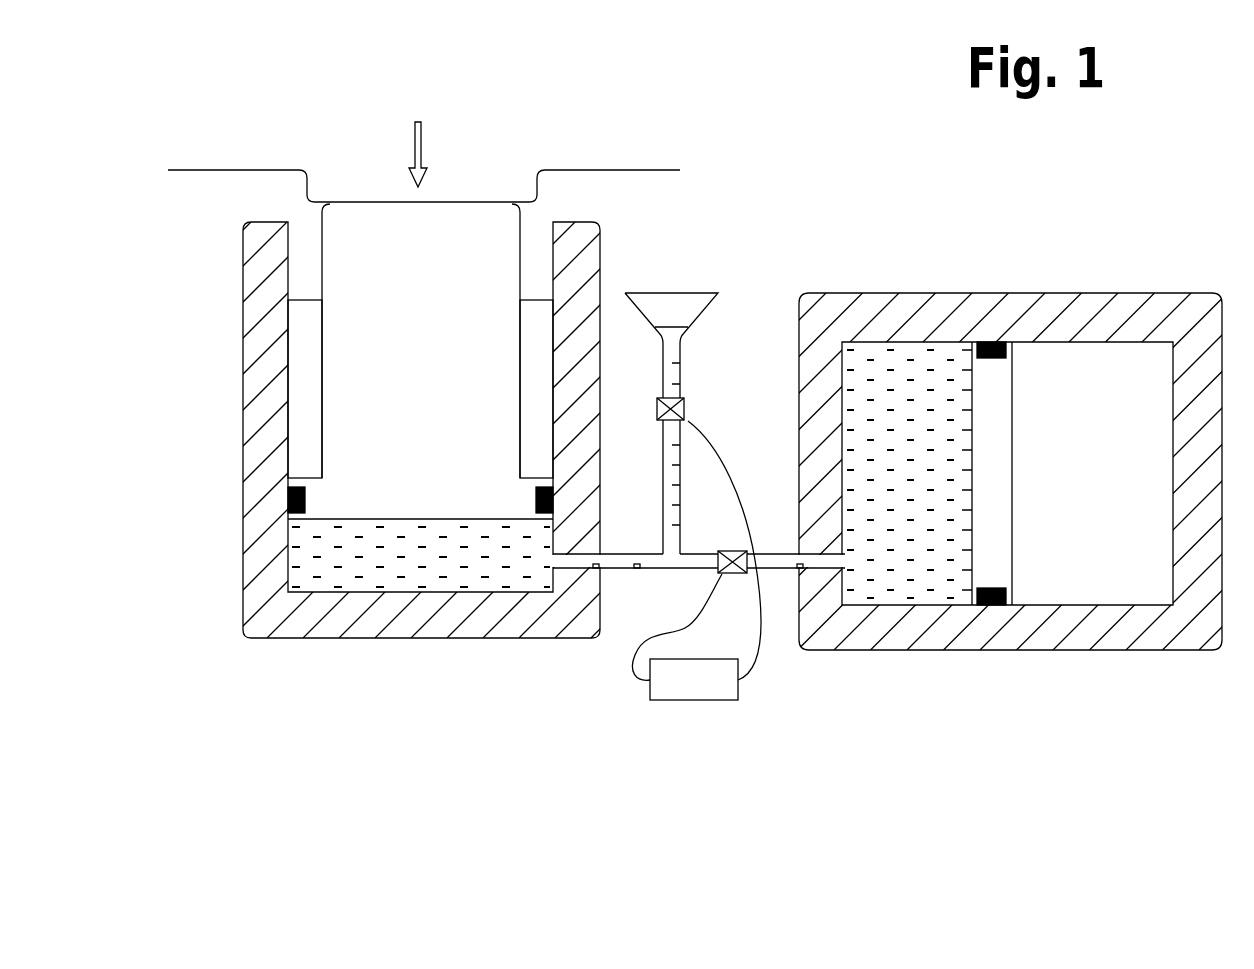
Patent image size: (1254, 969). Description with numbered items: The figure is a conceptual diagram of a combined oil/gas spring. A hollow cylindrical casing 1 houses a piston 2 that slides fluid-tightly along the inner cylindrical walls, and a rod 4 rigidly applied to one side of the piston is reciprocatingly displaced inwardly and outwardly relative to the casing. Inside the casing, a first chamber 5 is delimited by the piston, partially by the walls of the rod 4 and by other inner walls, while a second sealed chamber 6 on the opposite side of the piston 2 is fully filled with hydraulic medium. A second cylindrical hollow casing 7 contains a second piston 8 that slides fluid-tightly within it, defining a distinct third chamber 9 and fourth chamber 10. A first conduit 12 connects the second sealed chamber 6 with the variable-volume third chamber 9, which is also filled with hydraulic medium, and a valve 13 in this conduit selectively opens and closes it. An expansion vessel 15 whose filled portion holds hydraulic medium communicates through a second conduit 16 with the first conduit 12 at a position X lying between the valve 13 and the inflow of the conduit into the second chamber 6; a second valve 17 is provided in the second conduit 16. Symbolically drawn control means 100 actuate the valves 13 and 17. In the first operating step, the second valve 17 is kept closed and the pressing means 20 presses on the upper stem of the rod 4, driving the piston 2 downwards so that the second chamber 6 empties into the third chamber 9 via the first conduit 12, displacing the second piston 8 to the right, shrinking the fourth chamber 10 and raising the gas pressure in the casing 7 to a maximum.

The hollow cylindrical casing 1 is at (275, 458).
The piston 2 is at (373, 496).
The rod 4 is at (375, 314).
The first chamber 5 is at (305, 383).
The second sealed chamber 6 is at (410, 563).
The second cylindrical hollow casing 7 is at (820, 372).
The second piston 8 is at (993, 374).
The third chamber 9 is at (923, 373).
The fourth chamber 10 is at (1087, 376).
The first conduit 12 is at (631, 553).
The valve 13 is at (734, 579).
The expansion vessel 15 is at (682, 326).
The second conduit 16 is at (668, 432).
The second valve 17 is at (692, 410).
The pressing means 20 is at (588, 171).
The control means 100 is at (696, 560).
The position X is at (673, 568).